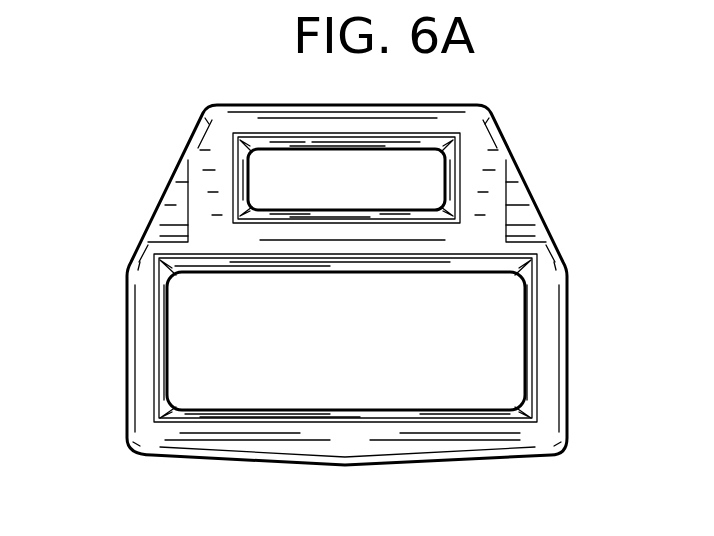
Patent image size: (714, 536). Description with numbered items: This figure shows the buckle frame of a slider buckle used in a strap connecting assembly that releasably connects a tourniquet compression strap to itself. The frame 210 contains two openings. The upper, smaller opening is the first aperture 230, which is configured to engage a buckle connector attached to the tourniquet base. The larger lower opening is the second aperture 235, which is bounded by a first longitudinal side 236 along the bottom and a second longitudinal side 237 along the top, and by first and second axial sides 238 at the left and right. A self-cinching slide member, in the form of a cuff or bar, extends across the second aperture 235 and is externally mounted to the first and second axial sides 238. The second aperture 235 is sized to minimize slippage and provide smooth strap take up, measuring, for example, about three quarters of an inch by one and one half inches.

The frame 210 is at (493, 120).
The first aperture 230 is at (257, 180).
The second aperture 235 is at (475, 367).
The first longitudinal side 236 is at (245, 460).
The second longitudinal side 237 is at (356, 274).
The first and second axial sides 238 is at (567, 298).